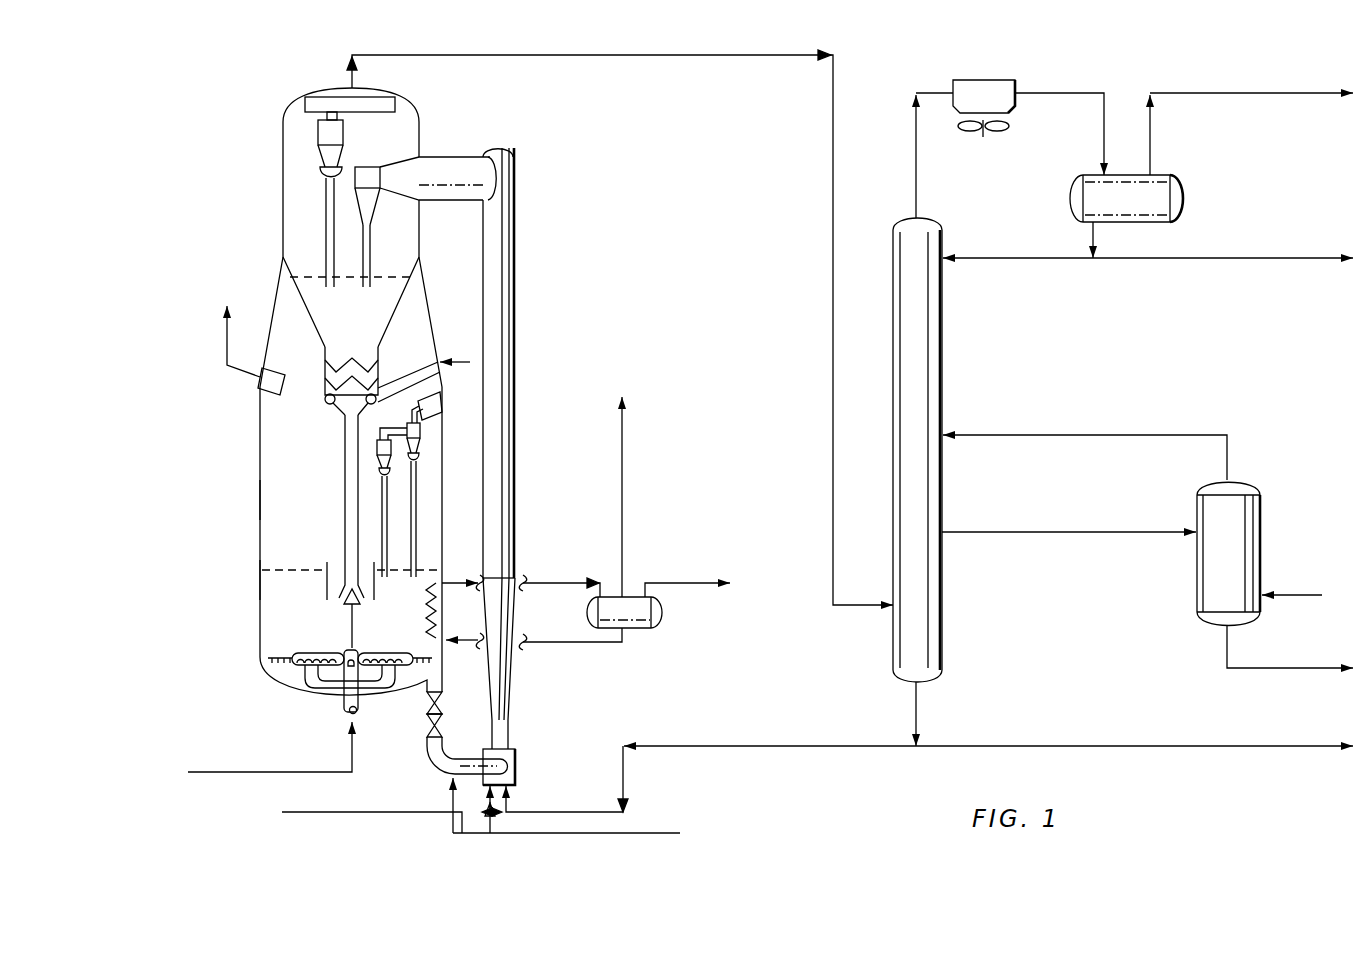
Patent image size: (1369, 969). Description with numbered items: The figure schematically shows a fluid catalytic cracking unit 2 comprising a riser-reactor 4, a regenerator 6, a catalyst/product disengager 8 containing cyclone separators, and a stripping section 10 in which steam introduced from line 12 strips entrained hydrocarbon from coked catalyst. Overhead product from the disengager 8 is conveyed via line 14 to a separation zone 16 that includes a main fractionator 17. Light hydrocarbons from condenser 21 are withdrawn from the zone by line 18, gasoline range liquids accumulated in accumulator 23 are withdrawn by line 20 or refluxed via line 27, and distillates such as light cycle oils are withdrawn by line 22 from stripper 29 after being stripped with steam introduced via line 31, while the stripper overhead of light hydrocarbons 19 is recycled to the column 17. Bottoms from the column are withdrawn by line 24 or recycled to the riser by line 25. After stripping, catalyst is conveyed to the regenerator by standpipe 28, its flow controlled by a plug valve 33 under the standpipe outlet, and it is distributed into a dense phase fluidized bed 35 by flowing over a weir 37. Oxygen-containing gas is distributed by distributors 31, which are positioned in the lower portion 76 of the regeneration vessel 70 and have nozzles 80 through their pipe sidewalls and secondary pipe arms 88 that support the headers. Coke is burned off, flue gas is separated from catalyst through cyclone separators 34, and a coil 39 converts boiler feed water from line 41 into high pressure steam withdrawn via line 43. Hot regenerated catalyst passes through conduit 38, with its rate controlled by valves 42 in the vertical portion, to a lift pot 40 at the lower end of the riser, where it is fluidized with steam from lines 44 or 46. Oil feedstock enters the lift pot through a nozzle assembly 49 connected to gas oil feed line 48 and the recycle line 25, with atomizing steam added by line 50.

The fluid catalytic cracking unit 2 is at (250, 93).
The riser-reactor 4 is at (515, 232).
The regenerator 6 is at (259, 462).
The disengager 8 is at (283, 157).
The stripping section 10 is at (383, 352).
The steam line 12 is at (460, 362).
The overhead product line 14 is at (648, 60).
The separation zone 16 is at (890, 210).
The main fractionator 17 is at (944, 330).
The light hydrocarbon withdrawal line 18 is at (1272, 95).
The stripper overhead 19 is at (1106, 433).
The gasoline withdrawal line 20 is at (1266, 256).
The condenser 21 is at (1016, 84).
The distillate withdrawal line 22 is at (1306, 666).
The accumulator 23 is at (1185, 198).
The bottoms withdrawal line 24 is at (1110, 744).
The recycle line 25 is at (748, 744).
The reflux line 27 is at (1008, 256).
The standpipe 28 is at (226, 343).
The stripper 29 is at (1262, 505).
The oxidant gas distributor 31 is at (295, 646).
The plug valve 33 is at (364, 618).
The cyclone separators 34 is at (421, 432).
The dense phase fluidized bed 35 is at (305, 601).
The weir 37 is at (327, 617).
The conduit 38 is at (428, 760).
The coil 39 is at (427, 608).
The lift pot 40 is at (515, 757).
The boiler feed water line 41 is at (577, 645).
The valves 42 is at (427, 735).
The steam withdrawal line 43 is at (562, 583).
The fluidizing gas line 44 is at (507, 800).
The fluidizing gas line 46 is at (453, 790).
The gas oil feed line 48 is at (230, 775).
The nozzle assembly 49 is at (488, 793).
The atomizing steam line 50 is at (491, 826).
The regeneration vessel 70 is at (260, 495).
The lower portion 76 is at (260, 580).
The nozzles 80 is at (285, 668).
The secondary pipe arms 88 is at (360, 697).